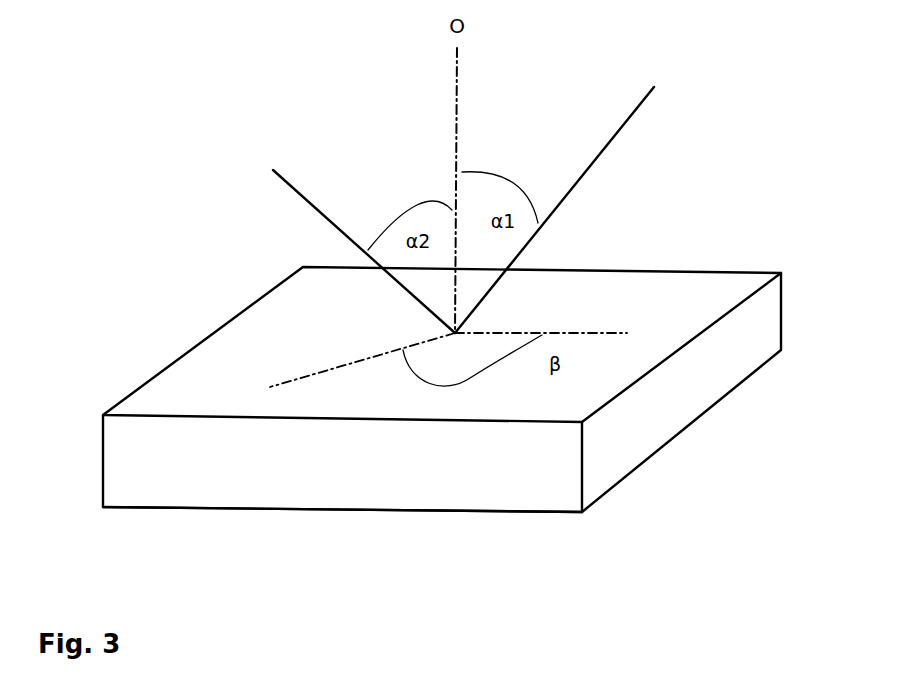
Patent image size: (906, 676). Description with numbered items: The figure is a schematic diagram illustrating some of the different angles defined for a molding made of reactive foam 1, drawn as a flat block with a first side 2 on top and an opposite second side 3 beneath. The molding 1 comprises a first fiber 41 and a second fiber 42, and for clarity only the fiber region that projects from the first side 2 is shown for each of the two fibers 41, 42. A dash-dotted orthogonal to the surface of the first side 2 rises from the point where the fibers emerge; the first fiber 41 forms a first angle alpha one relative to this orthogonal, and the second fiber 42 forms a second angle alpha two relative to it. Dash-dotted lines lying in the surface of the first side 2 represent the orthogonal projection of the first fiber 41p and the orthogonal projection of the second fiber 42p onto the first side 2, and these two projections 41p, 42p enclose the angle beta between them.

The molding made of reactive foam 1 is at (442, 392).
The first side of the molding 2 is at (240, 363).
The second side of the molding 3 is at (542, 510).
The first fiber 41 is at (570, 196).
The second fiber 42 is at (346, 235).
The orthogonal projection of the first fiber onto the first side 41p is at (543, 317).
The orthogonal projection of the second fiber onto the first side 42p is at (291, 364).